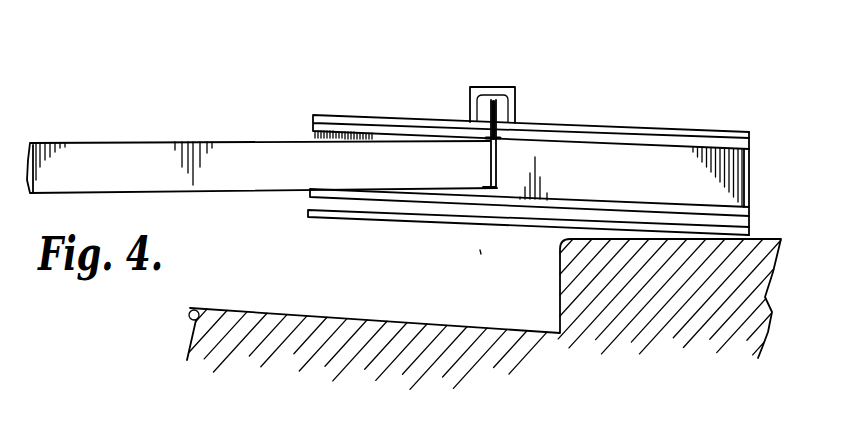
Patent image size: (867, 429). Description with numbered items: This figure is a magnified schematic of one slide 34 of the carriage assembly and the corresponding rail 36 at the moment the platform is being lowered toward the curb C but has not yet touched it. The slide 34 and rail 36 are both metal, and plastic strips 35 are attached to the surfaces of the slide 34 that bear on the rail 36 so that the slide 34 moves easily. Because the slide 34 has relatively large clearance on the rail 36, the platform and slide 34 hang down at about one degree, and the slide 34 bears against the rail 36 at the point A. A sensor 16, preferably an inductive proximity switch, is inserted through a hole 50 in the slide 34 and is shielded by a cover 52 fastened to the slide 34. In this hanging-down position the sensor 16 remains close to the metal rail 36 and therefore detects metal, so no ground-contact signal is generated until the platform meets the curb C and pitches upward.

The sensor 16 is at (514, 106).
The slide 34 is at (364, 115).
The plastic strip 35 is at (650, 144).
The rail 36 is at (199, 143).
The hole 50 is at (498, 137).
The cover 52 is at (492, 90).
The contact point A is at (497, 132).
The curb C is at (752, 238).